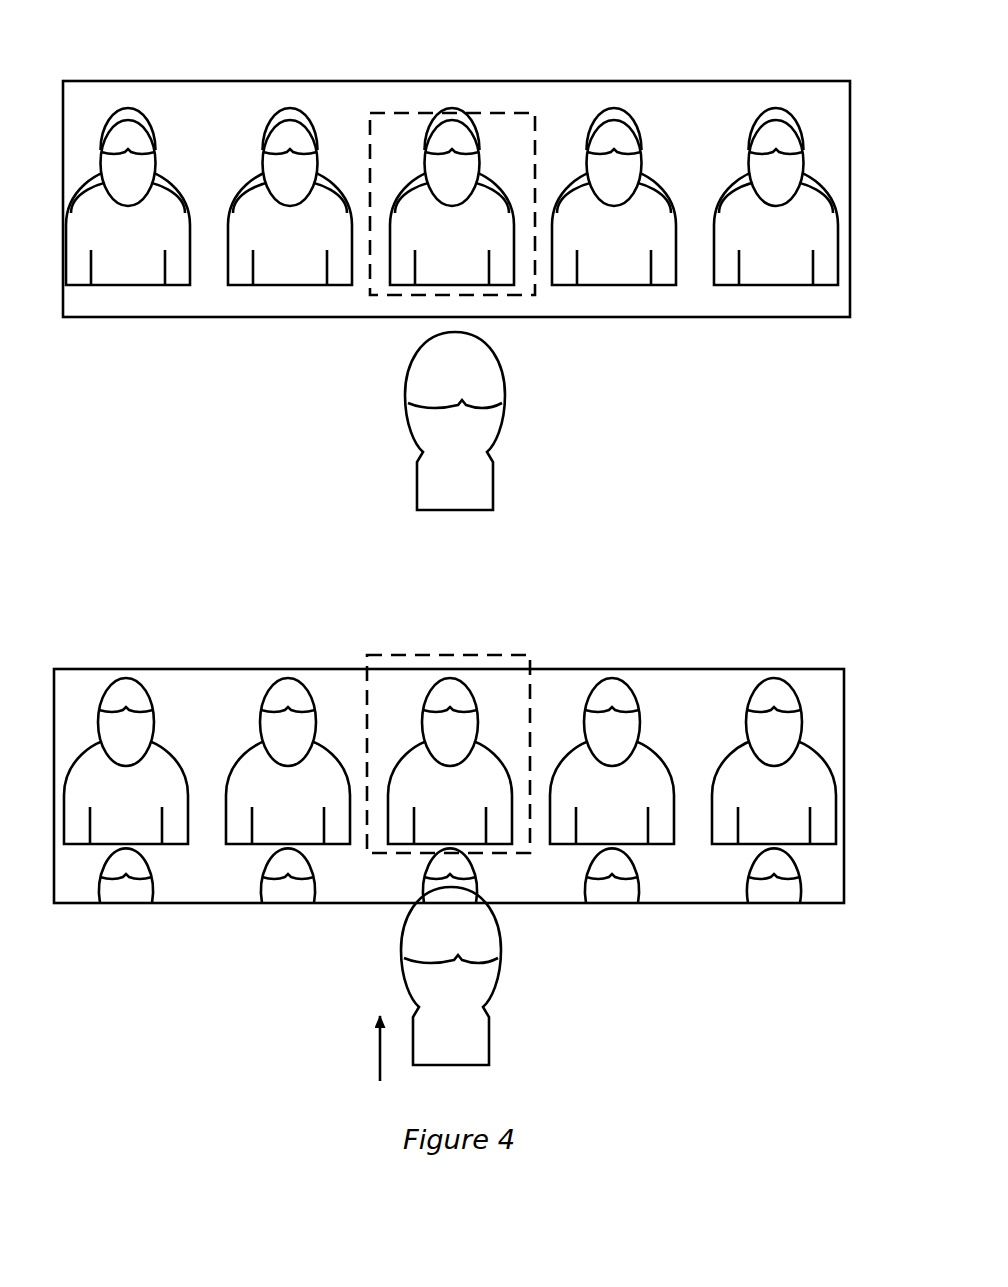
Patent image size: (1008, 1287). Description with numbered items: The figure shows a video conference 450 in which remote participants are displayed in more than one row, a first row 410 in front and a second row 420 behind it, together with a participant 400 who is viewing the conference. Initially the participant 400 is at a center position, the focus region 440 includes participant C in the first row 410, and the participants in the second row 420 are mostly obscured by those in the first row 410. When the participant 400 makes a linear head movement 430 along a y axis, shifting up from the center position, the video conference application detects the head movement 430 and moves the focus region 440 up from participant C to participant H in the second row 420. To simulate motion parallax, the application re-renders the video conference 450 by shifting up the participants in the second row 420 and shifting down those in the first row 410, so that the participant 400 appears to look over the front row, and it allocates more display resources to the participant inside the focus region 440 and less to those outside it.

The participant 400 is at (500, 809).
The first row 410 is at (842, 272).
The second row 420 is at (818, 706).
The head movement 430 is at (296, 1048).
The focus region 440 is at (367, 650).
The video conference 450 is at (452, 460).